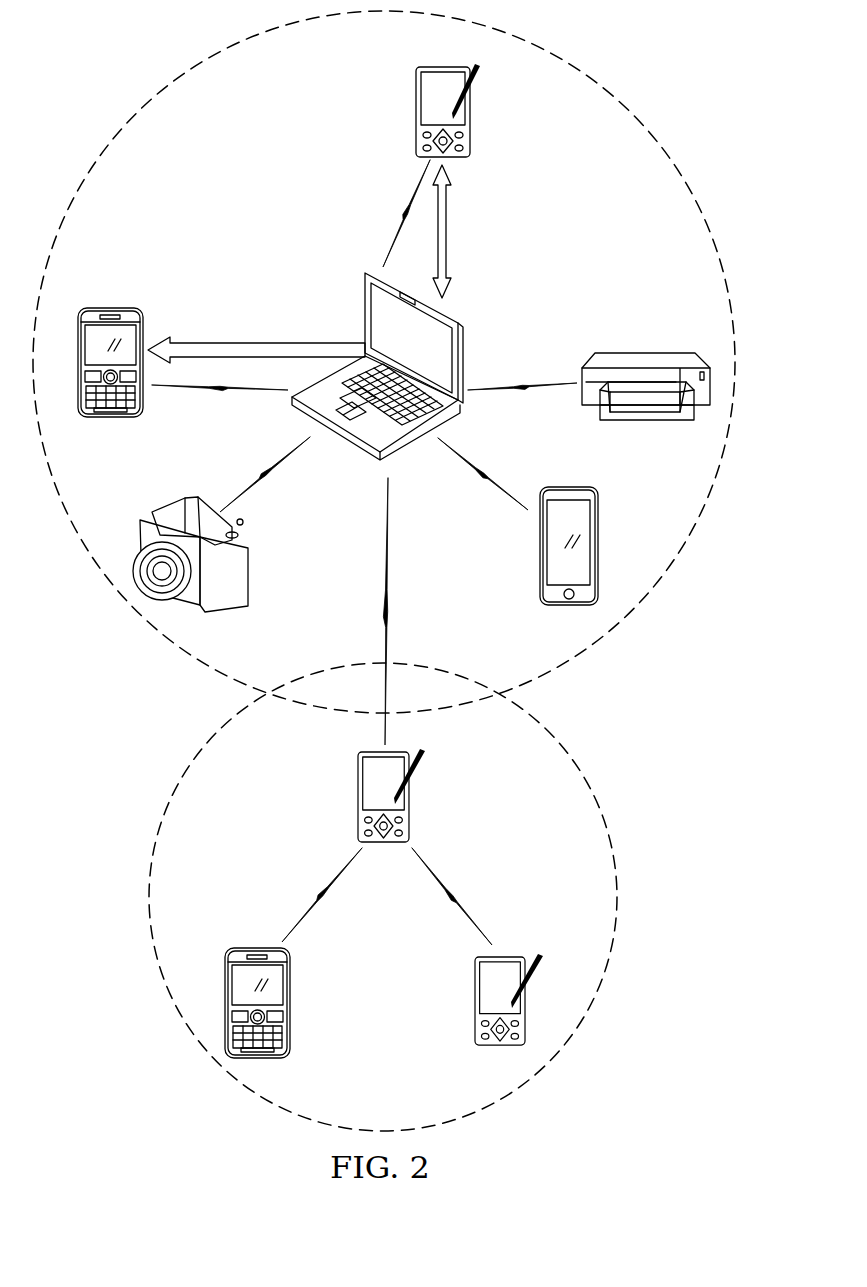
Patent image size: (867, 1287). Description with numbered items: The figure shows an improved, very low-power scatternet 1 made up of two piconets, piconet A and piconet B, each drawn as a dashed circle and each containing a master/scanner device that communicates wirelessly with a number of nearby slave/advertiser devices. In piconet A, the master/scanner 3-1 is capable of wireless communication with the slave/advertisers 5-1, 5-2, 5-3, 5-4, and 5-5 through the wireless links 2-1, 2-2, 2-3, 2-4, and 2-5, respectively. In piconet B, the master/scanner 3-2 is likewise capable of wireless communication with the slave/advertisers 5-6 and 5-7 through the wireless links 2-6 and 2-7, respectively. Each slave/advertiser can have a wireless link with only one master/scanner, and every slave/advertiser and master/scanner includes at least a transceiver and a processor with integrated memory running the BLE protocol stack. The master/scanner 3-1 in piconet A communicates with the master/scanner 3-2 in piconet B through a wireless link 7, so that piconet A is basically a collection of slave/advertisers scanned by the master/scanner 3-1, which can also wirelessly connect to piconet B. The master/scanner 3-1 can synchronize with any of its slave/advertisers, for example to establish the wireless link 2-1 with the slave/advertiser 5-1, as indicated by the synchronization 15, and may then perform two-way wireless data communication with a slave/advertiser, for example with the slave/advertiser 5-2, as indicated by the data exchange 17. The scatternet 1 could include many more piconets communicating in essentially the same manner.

The scatternet 1 is at (120, 666).
The wireless link 2-1 is at (235, 390).
The wireless link 2-2 is at (407, 200).
The wireless link 2-3 is at (540, 390).
The wireless link 2-4 is at (492, 488).
The wireless link 2-5 is at (283, 467).
The wireless link 2-6 is at (312, 905).
The wireless link 2-7 is at (458, 905).
The master/scanner 3-1 is at (460, 348).
The master/scanner 3-2 is at (358, 795).
The slave/advertiser 5-1 is at (112, 308).
The slave/advertiser 5-2 is at (470, 112).
The slave/advertiser 5-3 is at (645, 353).
The slave/advertiser 5-4 is at (540, 575).
The slave/advertiser 5-5 is at (168, 503).
The slave/advertiser 5-6 is at (290, 1003).
The slave/advertiser 5-7 is at (475, 1003).
The wireless link 7 is at (386, 702).
The synchronization 15 is at (267, 343).
The two-way wireless data communication 17 is at (450, 234).